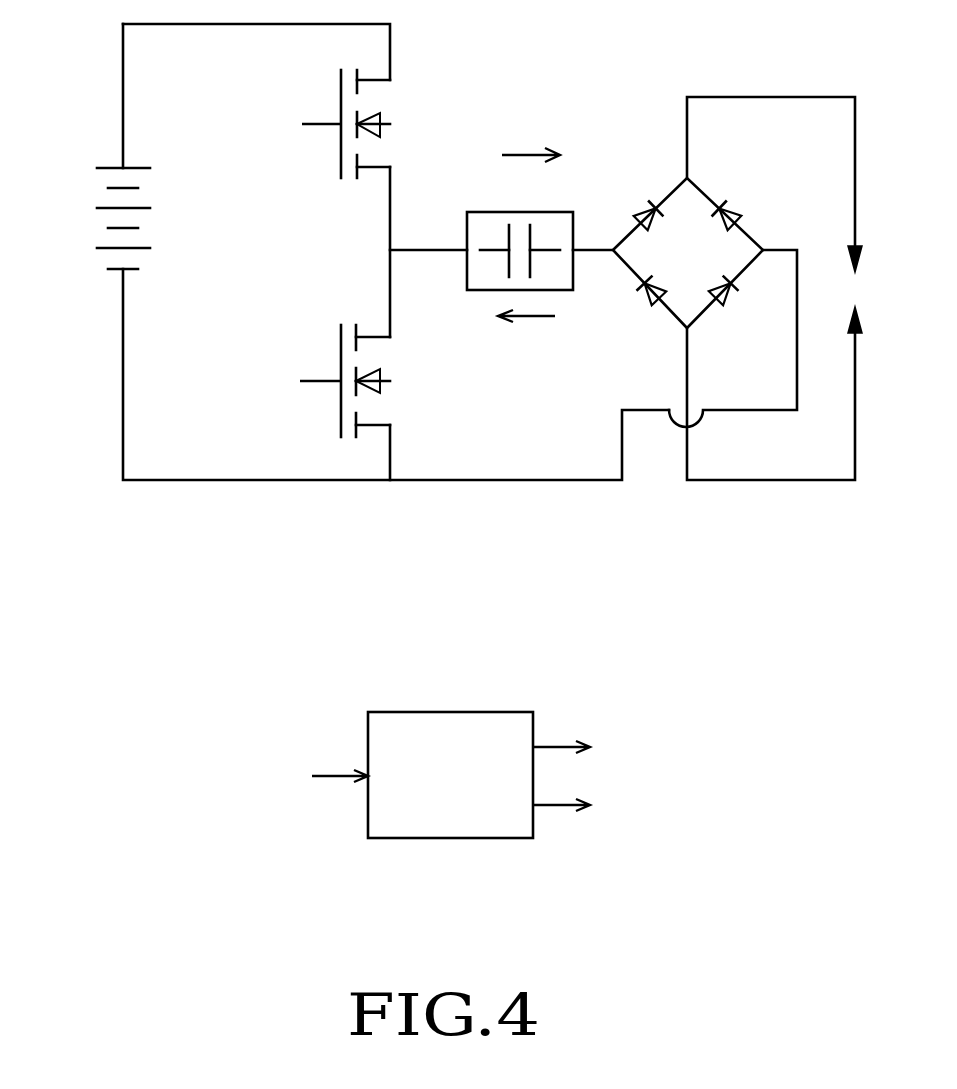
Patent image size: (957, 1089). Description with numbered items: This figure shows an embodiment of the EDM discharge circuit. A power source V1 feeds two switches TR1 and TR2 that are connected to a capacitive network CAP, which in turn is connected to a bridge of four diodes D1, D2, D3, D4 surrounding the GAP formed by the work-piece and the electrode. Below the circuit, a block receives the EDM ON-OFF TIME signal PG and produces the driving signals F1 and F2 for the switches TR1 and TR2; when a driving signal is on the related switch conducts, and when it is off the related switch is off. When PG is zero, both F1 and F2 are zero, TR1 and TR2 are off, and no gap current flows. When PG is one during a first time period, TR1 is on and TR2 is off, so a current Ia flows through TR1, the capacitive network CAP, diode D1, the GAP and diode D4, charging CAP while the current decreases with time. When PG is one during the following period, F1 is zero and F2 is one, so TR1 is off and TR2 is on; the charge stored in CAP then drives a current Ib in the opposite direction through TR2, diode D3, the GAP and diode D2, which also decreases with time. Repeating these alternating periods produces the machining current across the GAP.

The power source V1 is at (107, 168).
The switch TR1 is at (390, 122).
The switch TR2 is at (388, 380).
The driving signal F1 is at (440, 437).
The driving signal F2 is at (442, 596).
The capacitive network CAP is at (560, 210).
The current Ia is at (531, 140).
The current Ib is at (526, 336).
The diode D1 is at (650, 202).
The diode D2 is at (642, 297).
The diode D3 is at (723, 203).
The diode D4 is at (732, 295).
The gap GAP is at (858, 293).
The EDM ON-OFF TIME signal PG is at (401, 775).